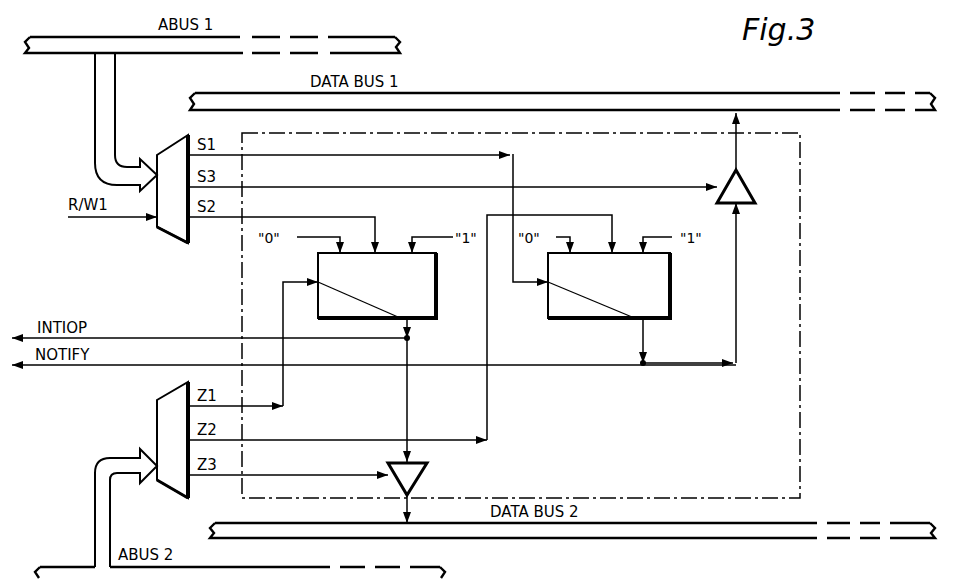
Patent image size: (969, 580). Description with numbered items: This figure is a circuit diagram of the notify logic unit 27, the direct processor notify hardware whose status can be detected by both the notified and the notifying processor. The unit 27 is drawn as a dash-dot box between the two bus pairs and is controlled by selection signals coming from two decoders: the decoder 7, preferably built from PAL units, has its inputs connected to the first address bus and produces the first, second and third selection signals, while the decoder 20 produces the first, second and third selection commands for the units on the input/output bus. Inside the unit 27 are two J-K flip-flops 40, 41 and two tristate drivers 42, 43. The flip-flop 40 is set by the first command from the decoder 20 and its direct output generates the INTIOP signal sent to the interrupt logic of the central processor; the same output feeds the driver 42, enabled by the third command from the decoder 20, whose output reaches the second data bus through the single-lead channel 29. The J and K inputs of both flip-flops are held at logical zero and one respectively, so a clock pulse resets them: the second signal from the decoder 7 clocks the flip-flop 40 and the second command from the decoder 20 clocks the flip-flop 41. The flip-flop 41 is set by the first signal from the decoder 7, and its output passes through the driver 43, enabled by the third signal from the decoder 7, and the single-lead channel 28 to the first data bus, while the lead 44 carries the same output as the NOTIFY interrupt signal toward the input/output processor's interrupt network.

The decoder 7 is at (160, 232).
The decoder 20 is at (157, 415).
The notify logic unit 27 is at (242, 250).
The channel 28 is at (736, 148).
The channel 29 is at (405, 500).
The J-K flip-flop 40 is at (439, 275).
The J-K flip-flop 41 is at (548, 280).
The tristate driver 42 is at (427, 470).
The tristate driver 43 is at (745, 182).
The lead 44 is at (610, 367).